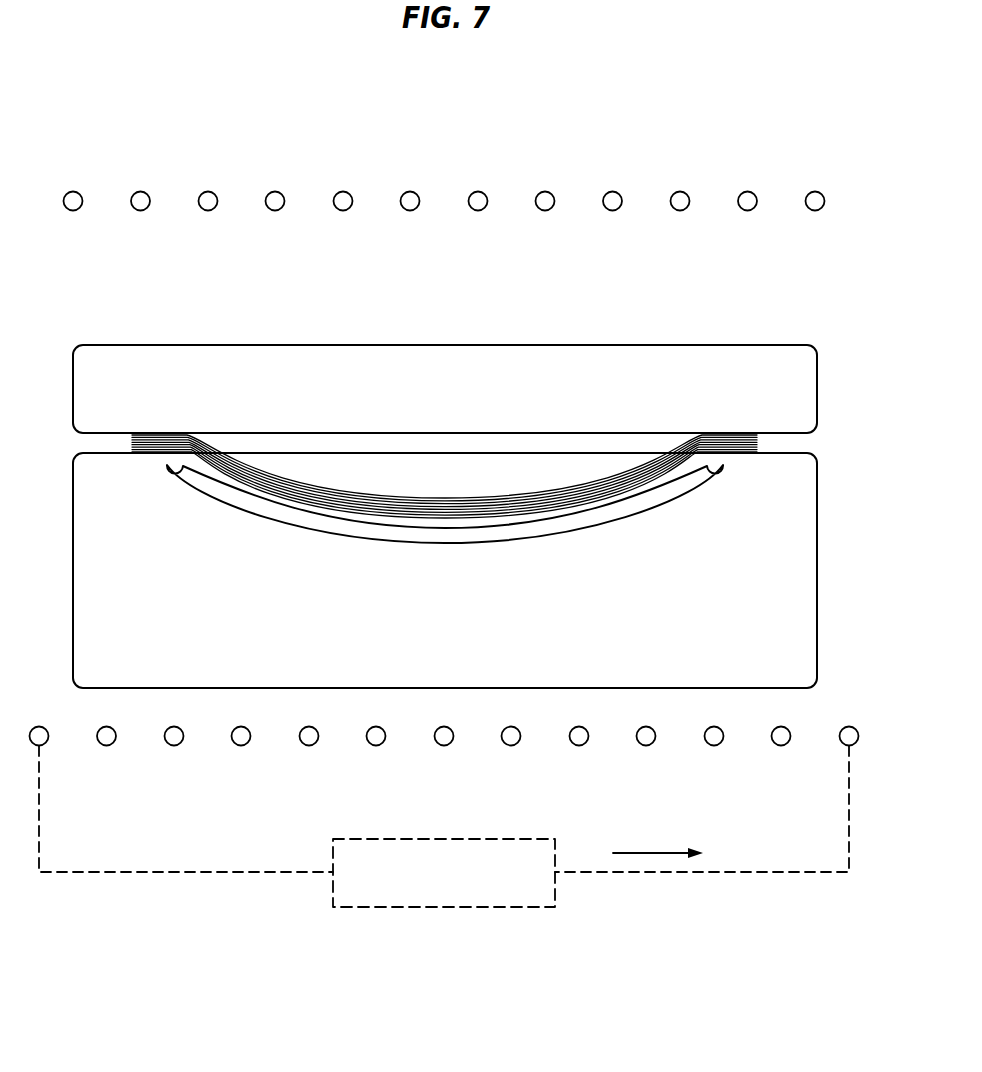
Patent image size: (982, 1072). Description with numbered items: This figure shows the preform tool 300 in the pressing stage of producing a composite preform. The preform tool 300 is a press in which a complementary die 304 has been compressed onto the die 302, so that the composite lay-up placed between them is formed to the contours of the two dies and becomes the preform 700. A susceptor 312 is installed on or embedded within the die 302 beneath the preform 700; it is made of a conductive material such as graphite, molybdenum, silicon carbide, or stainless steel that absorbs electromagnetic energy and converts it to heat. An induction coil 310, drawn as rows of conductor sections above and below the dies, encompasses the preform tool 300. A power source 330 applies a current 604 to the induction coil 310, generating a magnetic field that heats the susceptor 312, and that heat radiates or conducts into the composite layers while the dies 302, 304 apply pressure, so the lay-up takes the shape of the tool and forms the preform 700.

The preform tool 300 is at (149, 118).
The induction coil 310 is at (275, 191).
The complementary die 304 is at (720, 345).
The die 302 is at (817, 529).
The preform 700 is at (776, 442).
The susceptor 312 is at (540, 540).
The power source 330 is at (555, 886).
The current 604 is at (653, 853).